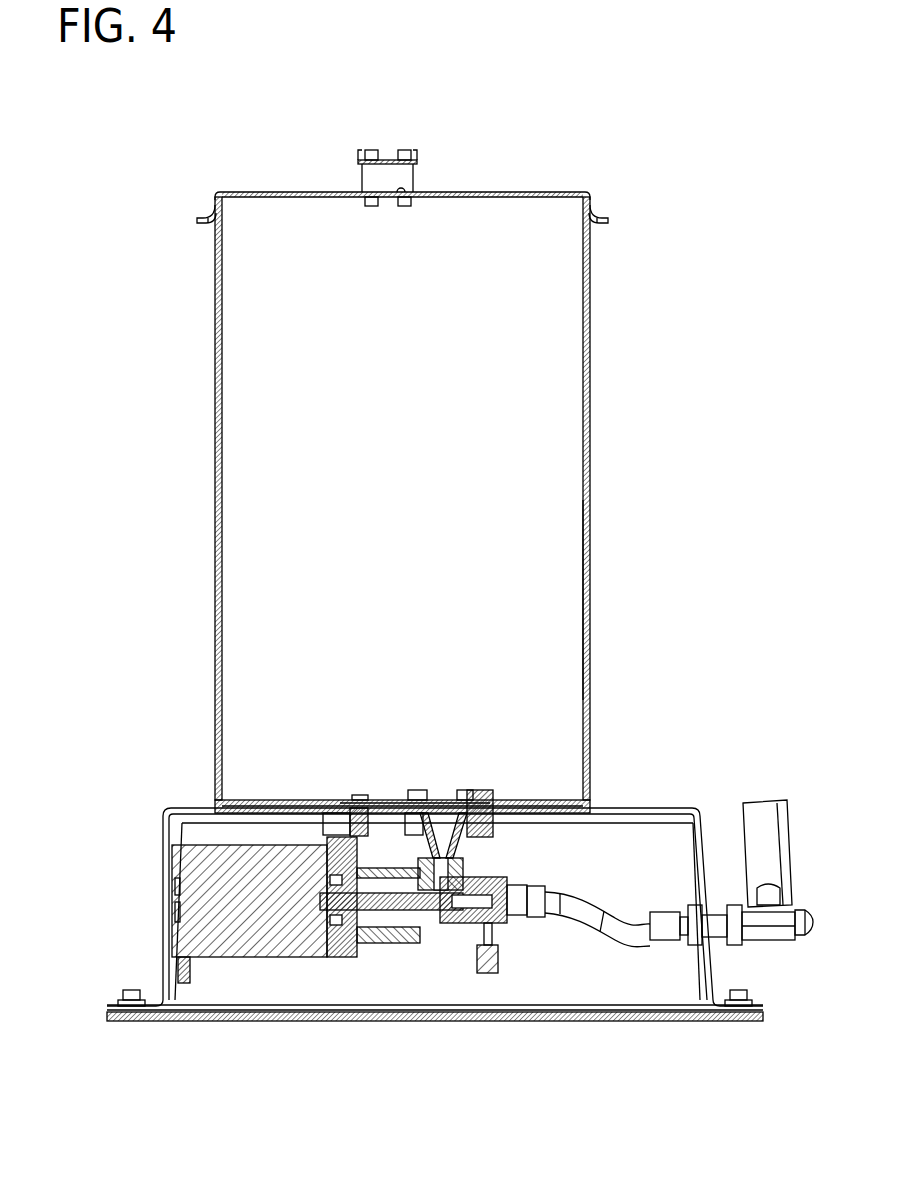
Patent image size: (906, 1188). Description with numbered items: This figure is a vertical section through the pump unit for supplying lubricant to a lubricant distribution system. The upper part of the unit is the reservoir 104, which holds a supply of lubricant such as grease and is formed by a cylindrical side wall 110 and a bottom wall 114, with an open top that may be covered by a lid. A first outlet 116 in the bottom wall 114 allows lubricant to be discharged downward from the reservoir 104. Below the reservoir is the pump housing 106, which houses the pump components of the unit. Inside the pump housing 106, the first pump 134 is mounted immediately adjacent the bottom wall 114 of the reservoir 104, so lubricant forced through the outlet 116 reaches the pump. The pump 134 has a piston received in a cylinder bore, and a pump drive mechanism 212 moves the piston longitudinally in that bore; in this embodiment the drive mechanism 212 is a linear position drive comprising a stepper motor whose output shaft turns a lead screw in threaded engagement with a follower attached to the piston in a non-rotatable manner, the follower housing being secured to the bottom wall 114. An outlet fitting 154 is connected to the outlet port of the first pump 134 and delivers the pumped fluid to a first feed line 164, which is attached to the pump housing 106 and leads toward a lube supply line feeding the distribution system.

The reservoir 104 is at (215, 402).
The pump housing 106 is at (163, 857).
The cylindrical side wall 110 is at (590, 602).
The bottom wall 114 is at (297, 797).
The first outlet 116 is at (443, 803).
The first pump 134 is at (407, 973).
The outlet fitting 154 is at (527, 890).
The first feed line 164 is at (588, 898).
The pump drive mechanism 212 is at (280, 967).